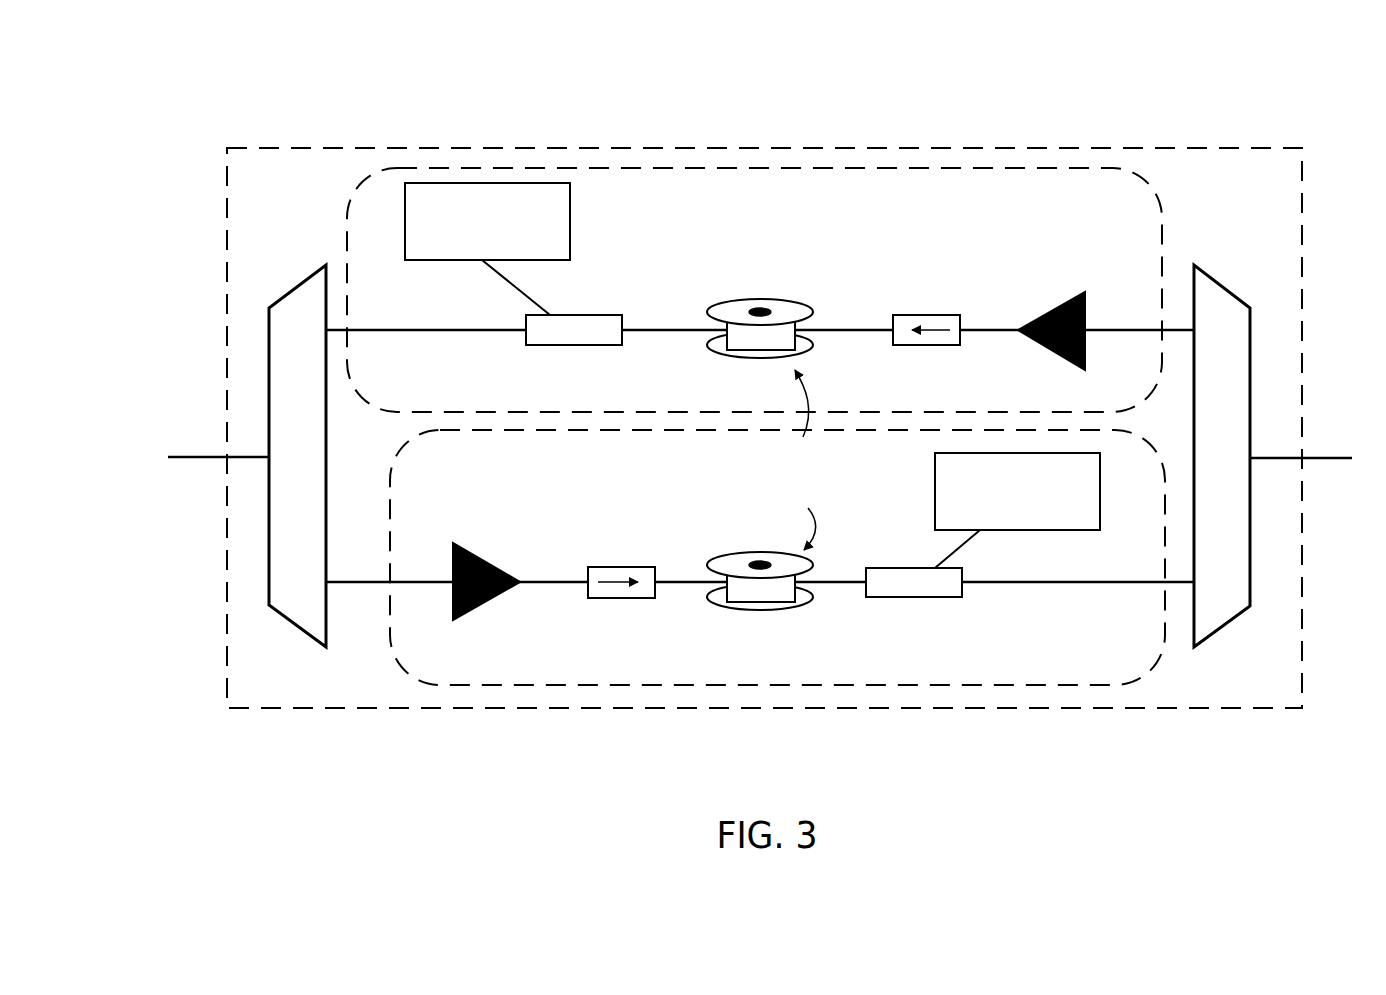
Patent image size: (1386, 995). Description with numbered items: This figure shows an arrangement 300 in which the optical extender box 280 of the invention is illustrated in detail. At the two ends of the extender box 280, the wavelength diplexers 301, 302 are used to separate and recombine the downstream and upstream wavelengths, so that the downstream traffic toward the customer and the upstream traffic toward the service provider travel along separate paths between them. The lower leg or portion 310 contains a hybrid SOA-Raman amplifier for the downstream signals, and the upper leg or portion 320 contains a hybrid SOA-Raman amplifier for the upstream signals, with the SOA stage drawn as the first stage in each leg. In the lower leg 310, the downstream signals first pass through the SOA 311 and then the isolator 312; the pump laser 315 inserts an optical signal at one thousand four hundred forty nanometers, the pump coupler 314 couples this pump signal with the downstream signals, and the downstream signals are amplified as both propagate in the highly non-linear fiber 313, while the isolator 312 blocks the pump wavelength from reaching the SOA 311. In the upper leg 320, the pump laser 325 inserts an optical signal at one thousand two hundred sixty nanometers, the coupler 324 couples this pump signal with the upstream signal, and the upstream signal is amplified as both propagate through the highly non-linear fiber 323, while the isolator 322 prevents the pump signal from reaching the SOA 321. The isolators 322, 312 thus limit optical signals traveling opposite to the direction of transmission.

The optical regenerator system 300 is at (1347, 78).
The optical extender box 280 is at (272, 148).
The wavelength diplexer 301 is at (305, 640).
The wavelength diplexer 302 is at (1213, 632).
The upper leg or portion 320 is at (1068, 168).
The SOA 321 is at (1042, 315).
The isolator 322 is at (907, 315).
The highly non-linear fiber 323 is at (772, 312).
The coupler 324 is at (583, 315).
The pump laser 325 is at (516, 183).
The lower leg or portion 310 is at (428, 678).
The SOA 311 is at (500, 597).
The isolator 312 is at (640, 598).
The highly non-linear fiber 313 is at (795, 605).
The pump coupler 314 is at (950, 597).
The pump laser 315 is at (1040, 530).